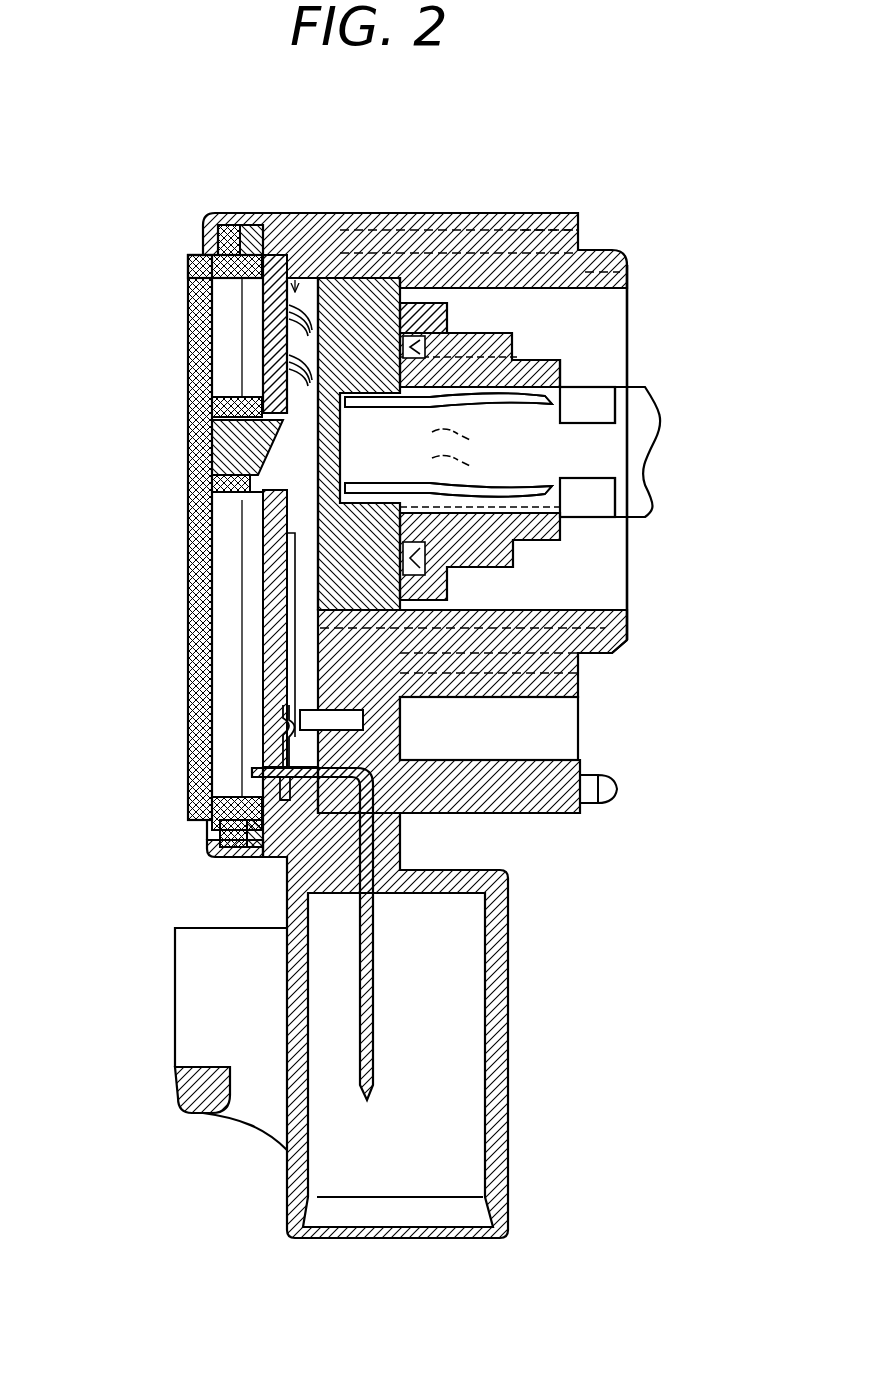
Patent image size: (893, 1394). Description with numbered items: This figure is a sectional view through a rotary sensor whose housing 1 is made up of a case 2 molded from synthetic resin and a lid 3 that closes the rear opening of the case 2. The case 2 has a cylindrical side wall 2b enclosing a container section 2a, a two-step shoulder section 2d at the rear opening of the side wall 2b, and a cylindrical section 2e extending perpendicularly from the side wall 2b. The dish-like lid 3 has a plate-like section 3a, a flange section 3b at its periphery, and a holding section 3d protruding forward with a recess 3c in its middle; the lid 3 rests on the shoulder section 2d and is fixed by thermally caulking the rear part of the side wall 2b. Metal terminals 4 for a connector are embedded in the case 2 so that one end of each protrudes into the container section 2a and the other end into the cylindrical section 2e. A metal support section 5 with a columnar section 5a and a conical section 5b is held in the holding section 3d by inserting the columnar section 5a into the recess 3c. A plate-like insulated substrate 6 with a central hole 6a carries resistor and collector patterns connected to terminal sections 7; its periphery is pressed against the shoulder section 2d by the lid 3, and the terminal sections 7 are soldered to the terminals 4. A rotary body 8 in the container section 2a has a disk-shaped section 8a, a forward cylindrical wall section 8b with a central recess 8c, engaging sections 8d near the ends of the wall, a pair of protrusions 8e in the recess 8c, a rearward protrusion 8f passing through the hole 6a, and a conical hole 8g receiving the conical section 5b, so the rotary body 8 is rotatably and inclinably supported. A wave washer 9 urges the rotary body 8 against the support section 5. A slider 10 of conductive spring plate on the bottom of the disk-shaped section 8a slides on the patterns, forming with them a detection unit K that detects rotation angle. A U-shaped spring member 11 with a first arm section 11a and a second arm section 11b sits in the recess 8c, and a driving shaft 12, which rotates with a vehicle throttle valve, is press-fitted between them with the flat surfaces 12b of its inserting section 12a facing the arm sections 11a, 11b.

The housing 1 is at (188, 1123).
The case 2 is at (578, 213).
The container section 2a is at (285, 655).
The side wall 2b is at (507, 212).
The shoulder section 2d is at (277, 212).
The cylindrical section 2e is at (510, 1018).
The lid 3 is at (188, 708).
The plate-like section 3a is at (188, 270).
The flange section 3b is at (217, 212).
The recess 3c is at (188, 430).
The holding section 3d is at (188, 400).
The terminals 4 is at (380, 1075).
The support section 5 is at (188, 453).
The columnar section 5a is at (212, 480).
The conical section 5b is at (212, 522).
The insulated substrate 6 is at (275, 600).
The hole 6a is at (287, 548).
The terminal sections 7 is at (283, 733).
The rotary body 8 is at (563, 358).
The disk-shaped section 8a is at (362, 212).
The cylindrical wall section 8b is at (543, 212).
The recess 8c is at (607, 655).
The engaging sections 8d is at (517, 340).
The protrusions 8e is at (413, 212).
The protrusion 8f is at (283, 388).
The conical hole 8g is at (283, 370).
The wave washer 9 is at (452, 697).
The slider 10 is at (333, 212).
The spring member 11 is at (505, 565).
The first arm section 11a is at (560, 393).
The second arm section 11b is at (525, 518).
The driving shaft 12 is at (660, 482).
The inserting section 12a is at (560, 487).
The flat surfaces 12b is at (560, 403).
The detection unit K is at (298, 212).